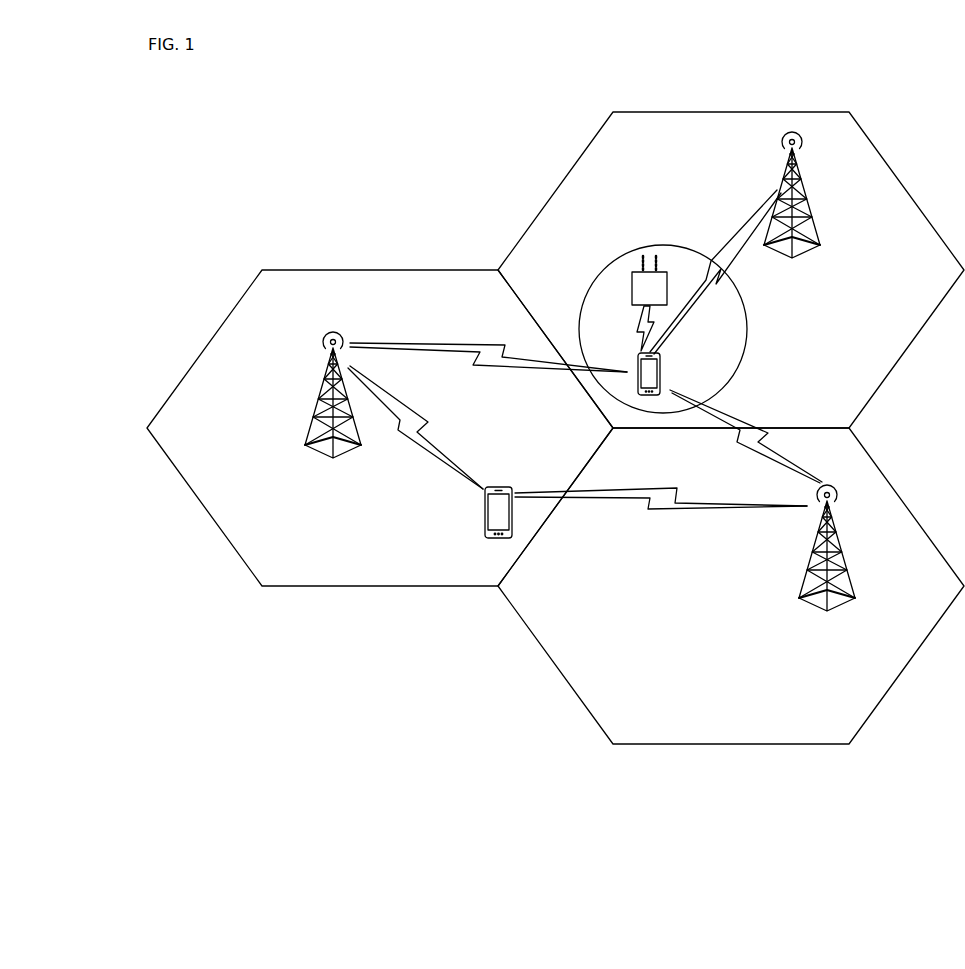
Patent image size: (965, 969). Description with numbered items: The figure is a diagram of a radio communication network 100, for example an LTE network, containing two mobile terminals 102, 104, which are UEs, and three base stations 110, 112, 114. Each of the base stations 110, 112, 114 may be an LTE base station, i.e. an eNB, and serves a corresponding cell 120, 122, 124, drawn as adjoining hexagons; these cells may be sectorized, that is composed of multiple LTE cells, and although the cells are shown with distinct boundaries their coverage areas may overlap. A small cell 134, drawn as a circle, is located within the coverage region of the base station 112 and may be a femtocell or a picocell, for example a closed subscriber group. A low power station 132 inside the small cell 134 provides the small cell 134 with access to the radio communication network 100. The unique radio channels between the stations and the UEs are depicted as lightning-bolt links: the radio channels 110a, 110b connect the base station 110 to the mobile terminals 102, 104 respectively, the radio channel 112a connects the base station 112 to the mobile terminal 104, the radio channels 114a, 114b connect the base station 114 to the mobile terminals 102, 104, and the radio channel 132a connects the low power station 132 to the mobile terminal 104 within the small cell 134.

The radio communication network 100 is at (191, 153).
The mobile terminal 102 is at (498, 525).
The mobile terminal 104 is at (651, 383).
The base station 110 is at (333, 403).
The radio channel 110a is at (415, 427).
The radio channel 110b is at (488, 349).
The base station 112 is at (792, 205).
The radio channel 112a is at (715, 272).
The base station 114 is at (827, 559).
The radio channel 114a is at (661, 513).
The radio channel 114b is at (746, 437).
The cell 120 is at (178, 456).
The cell 122 is at (885, 202).
The cell 124 is at (583, 645).
The low power station 132 is at (649, 280).
The radio channel 132a is at (628, 328).
The small cell 134 is at (670, 245).